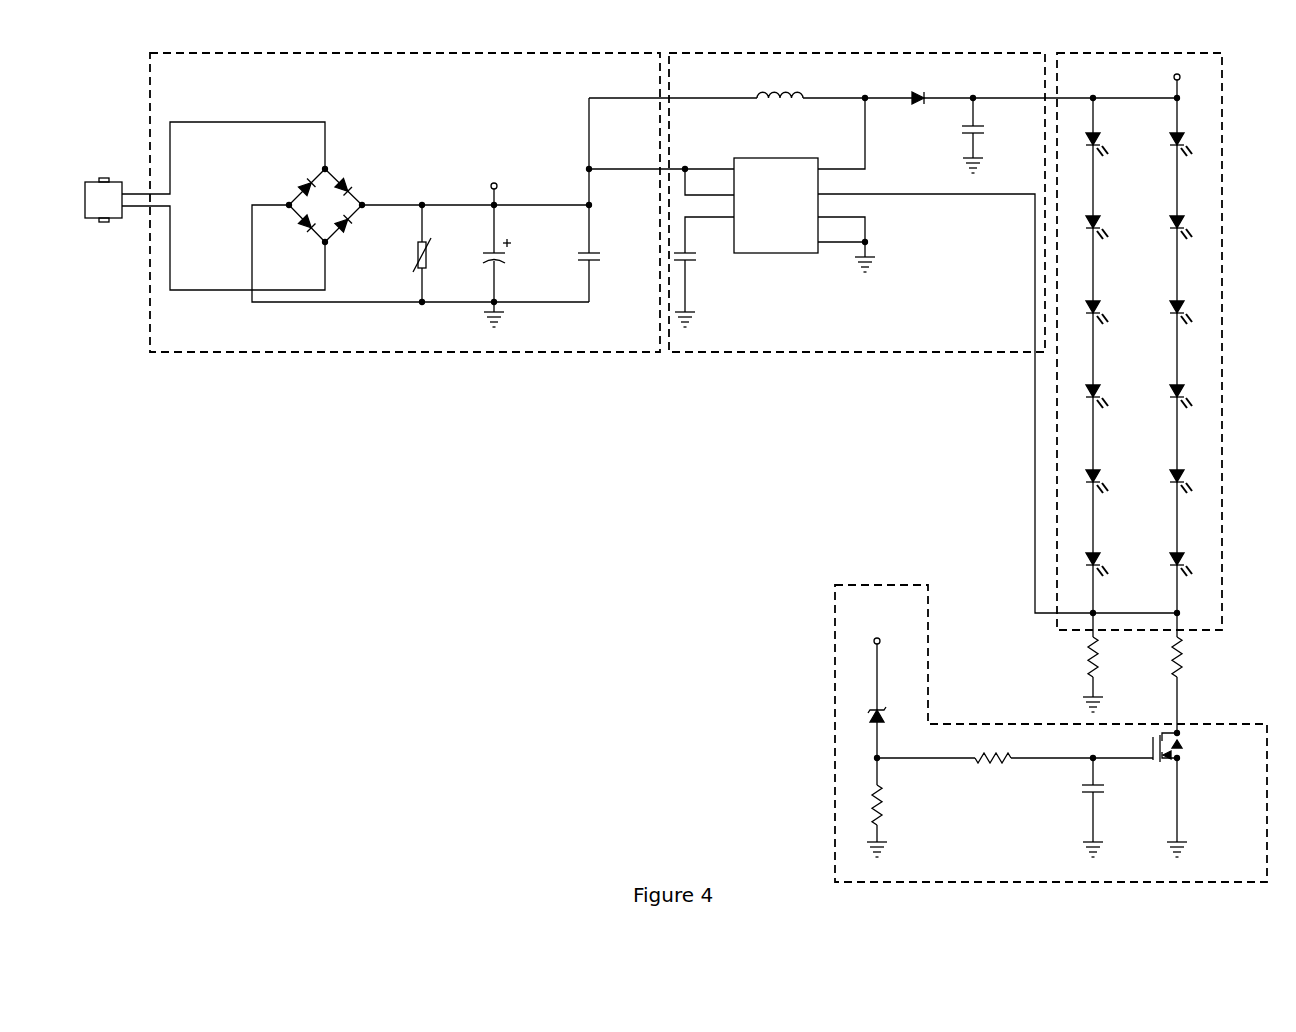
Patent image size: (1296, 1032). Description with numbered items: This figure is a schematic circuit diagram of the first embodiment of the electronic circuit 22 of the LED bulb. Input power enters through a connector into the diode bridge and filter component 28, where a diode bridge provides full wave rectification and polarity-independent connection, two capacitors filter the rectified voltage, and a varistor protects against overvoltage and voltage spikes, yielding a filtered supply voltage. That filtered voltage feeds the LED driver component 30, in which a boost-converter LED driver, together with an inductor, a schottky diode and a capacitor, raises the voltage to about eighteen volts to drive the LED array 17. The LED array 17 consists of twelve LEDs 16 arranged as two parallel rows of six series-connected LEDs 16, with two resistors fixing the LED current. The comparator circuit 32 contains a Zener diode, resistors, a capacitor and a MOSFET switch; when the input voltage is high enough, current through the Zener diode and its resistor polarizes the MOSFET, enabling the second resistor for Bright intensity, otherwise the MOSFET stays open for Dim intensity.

The electronic circuit 22 is at (224, 404).
The diode bridge and filter component 28 is at (383, 352).
The LED driver component 30 is at (773, 352).
The comparator circuit 32 is at (825, 585).
The LED array 17 is at (1222, 283).
The LEDs 16 is at (1088, 560).